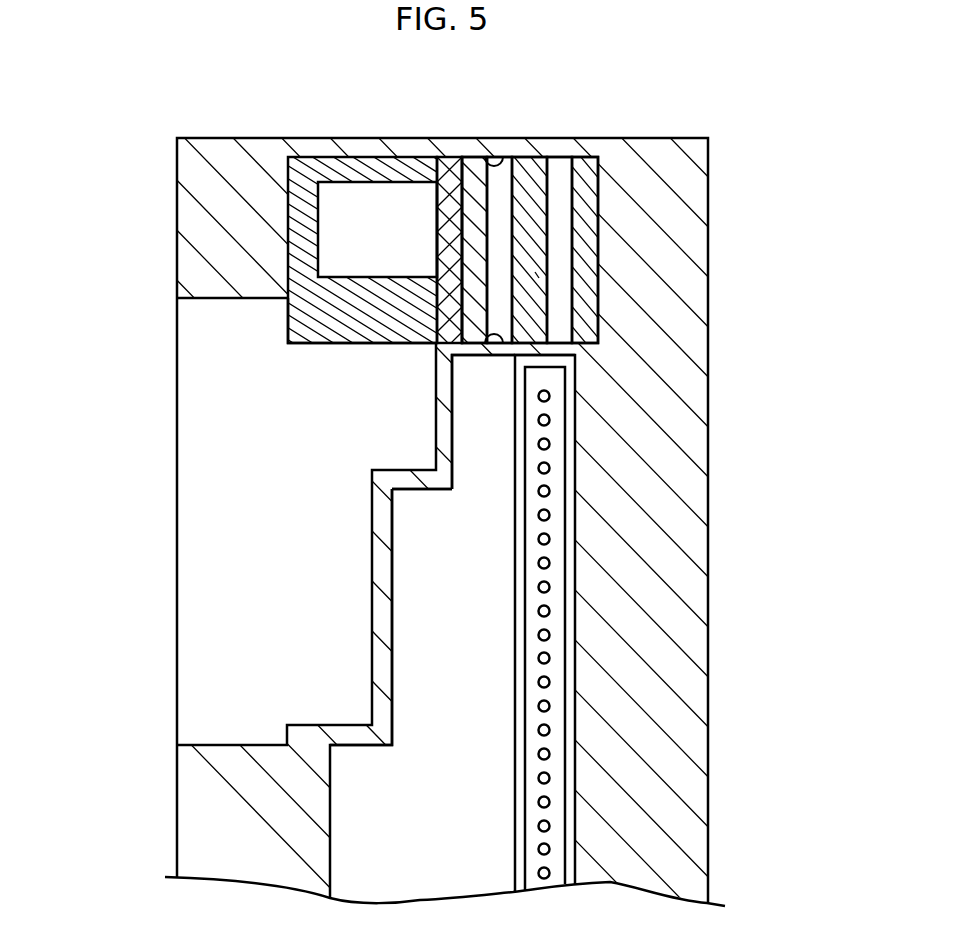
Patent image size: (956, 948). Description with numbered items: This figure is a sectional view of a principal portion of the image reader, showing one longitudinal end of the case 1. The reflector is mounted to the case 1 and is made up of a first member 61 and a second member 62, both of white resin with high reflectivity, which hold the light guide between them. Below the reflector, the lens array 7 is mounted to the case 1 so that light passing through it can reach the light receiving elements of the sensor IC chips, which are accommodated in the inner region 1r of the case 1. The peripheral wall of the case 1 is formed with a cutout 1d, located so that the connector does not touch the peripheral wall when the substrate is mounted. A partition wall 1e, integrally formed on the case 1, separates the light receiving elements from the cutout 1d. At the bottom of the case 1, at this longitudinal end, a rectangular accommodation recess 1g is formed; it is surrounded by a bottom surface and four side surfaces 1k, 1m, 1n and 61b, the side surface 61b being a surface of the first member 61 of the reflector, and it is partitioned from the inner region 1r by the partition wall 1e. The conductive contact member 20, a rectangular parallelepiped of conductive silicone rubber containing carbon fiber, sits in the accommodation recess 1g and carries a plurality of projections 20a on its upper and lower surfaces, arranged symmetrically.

The case 1 is at (687, 308).
The cutout 1d is at (193, 532).
The partition wall 1e is at (460, 350).
The accommodation recess 1g is at (537, 275).
The side surface 1k is at (591, 251).
The side surface 1m is at (481, 168).
The side surface 1n is at (491, 342).
The inner region 1r is at (452, 626).
The lens array 7 is at (535, 812).
The conductive contact member 20 is at (558, 200).
The projections 20a is at (590, 178).
The first member 61 is at (441, 178).
The side surface 61b is at (473, 178).
The second member 62 is at (345, 176).